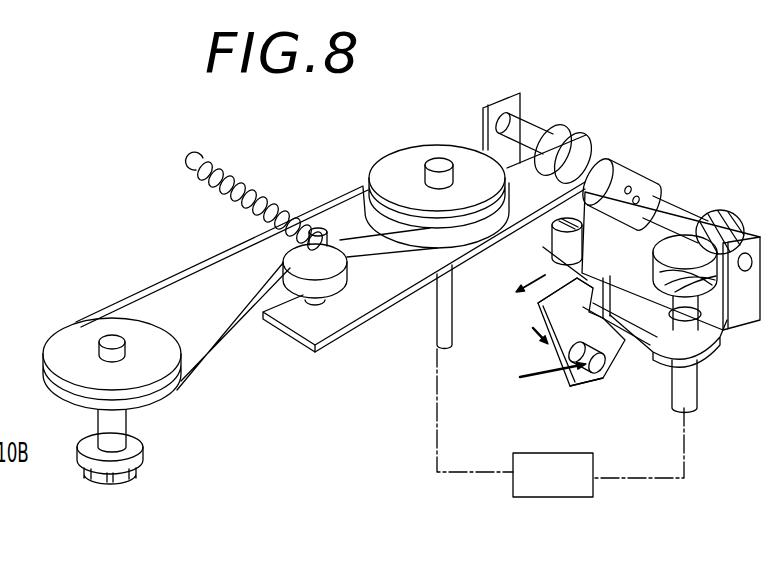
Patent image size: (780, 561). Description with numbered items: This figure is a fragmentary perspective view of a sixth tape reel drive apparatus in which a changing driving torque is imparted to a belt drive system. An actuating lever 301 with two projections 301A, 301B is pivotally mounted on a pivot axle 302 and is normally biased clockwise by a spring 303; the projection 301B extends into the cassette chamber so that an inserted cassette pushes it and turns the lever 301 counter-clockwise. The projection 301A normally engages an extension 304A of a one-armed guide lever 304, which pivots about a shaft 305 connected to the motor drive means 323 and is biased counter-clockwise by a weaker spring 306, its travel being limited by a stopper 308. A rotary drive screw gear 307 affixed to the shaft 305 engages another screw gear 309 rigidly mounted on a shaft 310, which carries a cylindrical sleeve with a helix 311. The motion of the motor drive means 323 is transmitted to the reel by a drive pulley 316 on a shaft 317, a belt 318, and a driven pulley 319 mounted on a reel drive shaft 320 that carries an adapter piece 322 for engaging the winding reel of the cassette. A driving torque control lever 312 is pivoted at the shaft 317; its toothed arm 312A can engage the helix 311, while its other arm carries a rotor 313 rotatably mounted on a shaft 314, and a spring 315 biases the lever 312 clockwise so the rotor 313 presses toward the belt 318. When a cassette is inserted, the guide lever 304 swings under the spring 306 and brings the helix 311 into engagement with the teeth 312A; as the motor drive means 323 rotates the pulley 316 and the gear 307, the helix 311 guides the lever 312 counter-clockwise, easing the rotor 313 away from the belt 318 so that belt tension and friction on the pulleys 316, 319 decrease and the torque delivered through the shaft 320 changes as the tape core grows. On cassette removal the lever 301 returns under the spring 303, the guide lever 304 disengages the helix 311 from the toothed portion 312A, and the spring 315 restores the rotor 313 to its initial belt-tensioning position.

The lever 301 is at (541, 318).
The projection 301A is at (547, 281).
The projection 301B is at (595, 385).
The pivot axle 302 is at (567, 380).
The spring 303 is at (528, 380).
The one-armed guide lever 304 is at (703, 342).
The extension 304A is at (617, 365).
The shaft 305 is at (688, 375).
The spring 306 is at (653, 318).
The rotary drive screw gear 307 is at (677, 257).
The stopper 308 is at (550, 237).
The screw gear 309 is at (723, 230).
The shaft 310 is at (673, 213).
The helix 311 is at (607, 162).
The driving torque control lever 312 is at (402, 294).
The toothed arm 312A is at (530, 172).
The rotor 313 is at (338, 305).
The shaft 314 is at (330, 264).
The spring 315 is at (246, 178).
The drive pulley 316 is at (393, 160).
The shaft 317 is at (442, 307).
The belt 318 is at (137, 302).
The driven pulley 319 is at (67, 347).
The reel drive shaft 320 is at (115, 424).
The adapter piece 322 is at (123, 473).
The motor drive means 323 is at (545, 487).